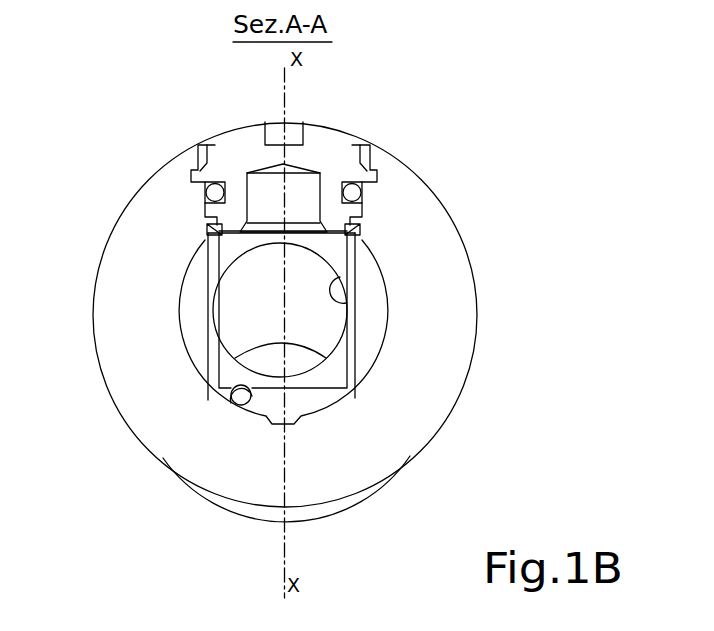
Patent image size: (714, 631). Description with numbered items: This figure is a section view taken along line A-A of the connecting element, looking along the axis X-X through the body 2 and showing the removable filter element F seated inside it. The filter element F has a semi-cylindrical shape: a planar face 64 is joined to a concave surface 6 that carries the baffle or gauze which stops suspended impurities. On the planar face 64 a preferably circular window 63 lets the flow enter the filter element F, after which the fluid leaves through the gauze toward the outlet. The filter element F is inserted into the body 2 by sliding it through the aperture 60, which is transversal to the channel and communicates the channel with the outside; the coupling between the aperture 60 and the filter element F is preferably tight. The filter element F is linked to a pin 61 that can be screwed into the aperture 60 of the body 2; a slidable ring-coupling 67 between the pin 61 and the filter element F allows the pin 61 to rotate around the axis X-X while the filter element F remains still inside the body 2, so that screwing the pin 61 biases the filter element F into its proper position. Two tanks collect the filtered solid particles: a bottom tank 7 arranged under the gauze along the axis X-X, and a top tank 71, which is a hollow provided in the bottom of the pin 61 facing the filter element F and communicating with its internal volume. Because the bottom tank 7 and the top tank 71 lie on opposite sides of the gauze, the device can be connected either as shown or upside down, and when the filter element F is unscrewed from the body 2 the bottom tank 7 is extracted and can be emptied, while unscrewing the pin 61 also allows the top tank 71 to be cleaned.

The body 2 is at (427, 238).
The concave surface 6 is at (240, 298).
The bottom tank 7 is at (240, 410).
The aperture 60 is at (365, 228).
The pin 61 is at (235, 158).
The window 63 is at (345, 310).
The planar face 64 is at (320, 383).
The slidable ring-coupling 67 is at (203, 234).
The top tank 71 is at (293, 197).
The filter element F is at (368, 338).